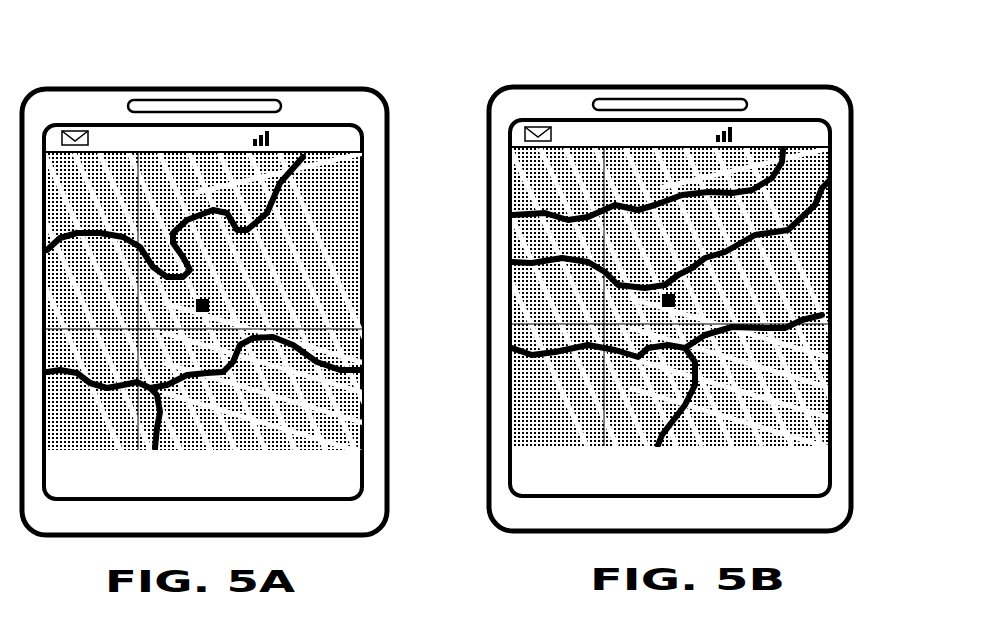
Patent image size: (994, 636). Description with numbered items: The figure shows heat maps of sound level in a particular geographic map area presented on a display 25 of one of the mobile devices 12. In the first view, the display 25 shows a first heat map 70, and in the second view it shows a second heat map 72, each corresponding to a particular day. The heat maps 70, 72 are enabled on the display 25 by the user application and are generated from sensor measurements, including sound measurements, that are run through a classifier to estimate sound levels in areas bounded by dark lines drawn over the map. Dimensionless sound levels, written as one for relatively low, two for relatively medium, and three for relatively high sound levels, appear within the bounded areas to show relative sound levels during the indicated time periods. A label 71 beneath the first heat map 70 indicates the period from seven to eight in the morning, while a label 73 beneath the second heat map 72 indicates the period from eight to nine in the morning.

In FIG. 5A, the mobile device 12 is at (112, 107).
In FIG. 5B, the mobile device 12 is at (617, 92).
In FIG. 5A, the display 25 is at (372, 172).
In FIG. 5B, the display 25 is at (508, 405).
In FIG. 5A, the first heat map 70 is at (352, 262).
In FIG. 5A, the label 71 is at (345, 488).
In FIG. 5B, the second heat map 72 is at (528, 315).
In FIG. 5B, the label 73 is at (802, 488).